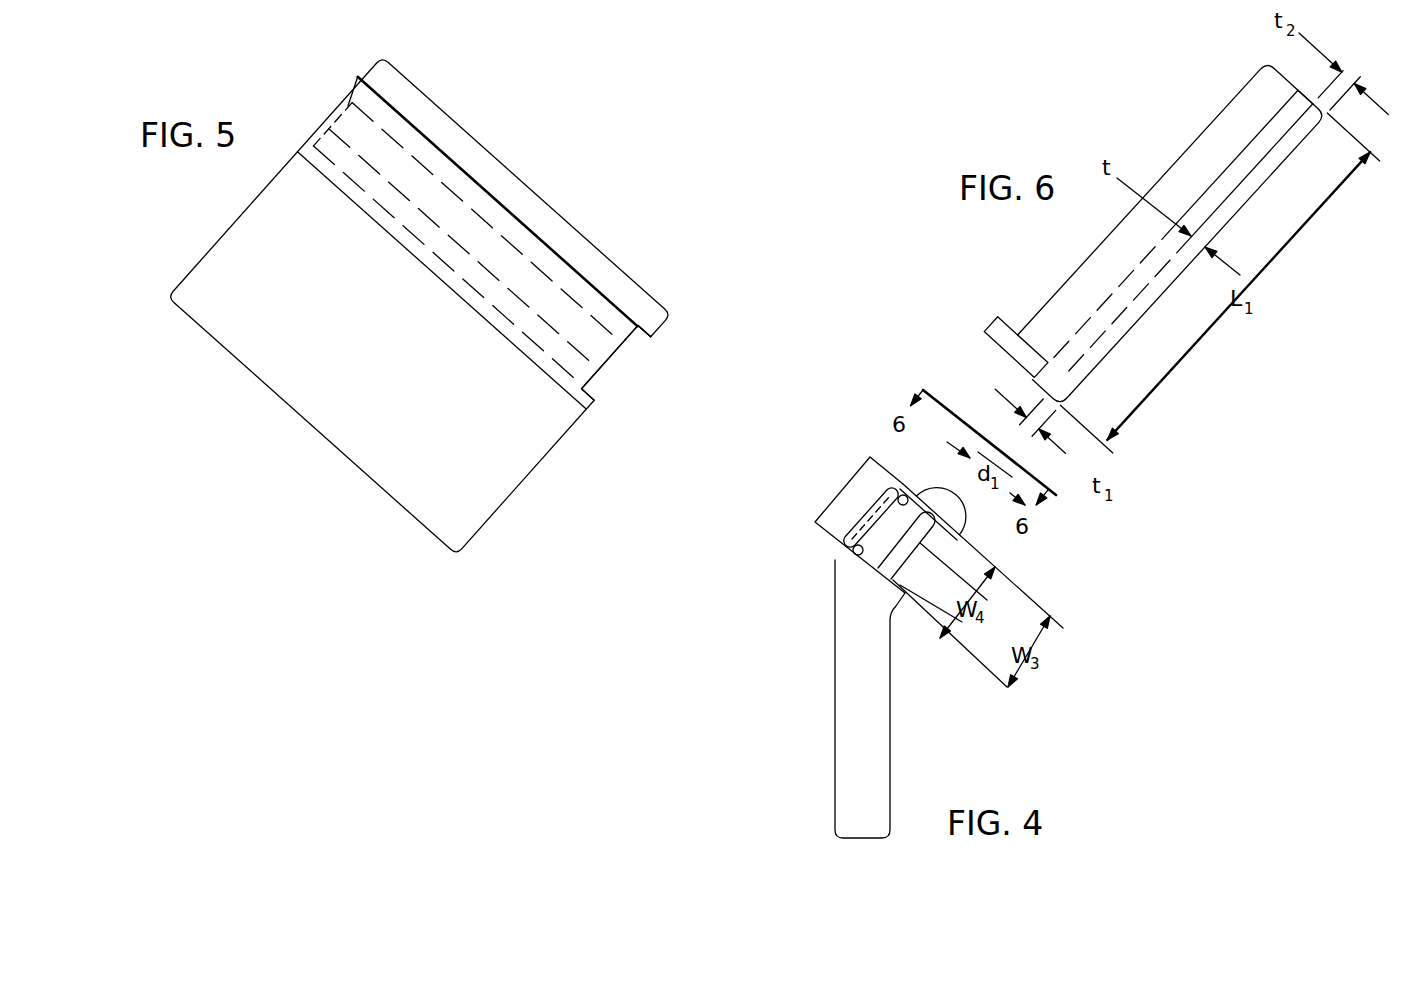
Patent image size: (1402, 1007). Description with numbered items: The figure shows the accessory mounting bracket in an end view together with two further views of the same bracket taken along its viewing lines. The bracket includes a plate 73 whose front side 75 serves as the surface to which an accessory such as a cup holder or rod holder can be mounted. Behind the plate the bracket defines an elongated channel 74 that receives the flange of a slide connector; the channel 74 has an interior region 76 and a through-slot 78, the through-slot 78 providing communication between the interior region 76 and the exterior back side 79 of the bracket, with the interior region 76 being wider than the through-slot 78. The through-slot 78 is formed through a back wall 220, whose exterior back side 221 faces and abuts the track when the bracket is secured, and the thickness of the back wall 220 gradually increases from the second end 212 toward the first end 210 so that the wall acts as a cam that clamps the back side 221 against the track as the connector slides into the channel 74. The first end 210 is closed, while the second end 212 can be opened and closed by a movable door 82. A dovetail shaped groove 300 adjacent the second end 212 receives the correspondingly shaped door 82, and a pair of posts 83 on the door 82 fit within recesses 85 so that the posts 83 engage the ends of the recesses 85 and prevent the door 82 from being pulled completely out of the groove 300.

In FIG. 5, the plate 73 is at (458, 556).
In FIG. 4, the plate 73 is at (861, 838).
In FIG. 5, the channel 74 is at (558, 253).
In FIG. 4, the channel 74 is at (873, 588).
In FIG. 6, the channel 74 is at (1187, 212).
In FIG. 5, the front side 75 is at (346, 406).
In FIG. 4, the front side 75 is at (833, 736).
In FIG. 4, the interior region 76 is at (920, 542).
In FIG. 6, the interior region 76 is at (1213, 172).
In FIG. 4, the through-slot 78 is at (922, 562).
In FIG. 4, the back side 79 is at (893, 617).
In FIG. 5, the movable door 82 is at (607, 377).
In FIG. 4, the movable door 82 is at (818, 525).
In FIG. 6, the movable door 82 is at (998, 317).
In FIG. 4, the posts 83 is at (905, 496).
In FIG. 4, the recesses 85 is at (865, 563).
In FIG. 5, the first end 210 is at (357, 74).
In FIG. 6, the first end 210 is at (1297, 90).
In FIG. 5, the second end 212 is at (651, 337).
In FIG. 6, the second end 212 is at (1032, 376).
In FIG. 4, the back wall 220 is at (912, 583).
In FIG. 6, the back wall 220 is at (1122, 334).
In FIG. 4, the back side 221 is at (905, 583).
In FIG. 6, the back side 221 is at (1243, 209).
In FIG. 5, the dovetail shaped groove 300 is at (645, 325).